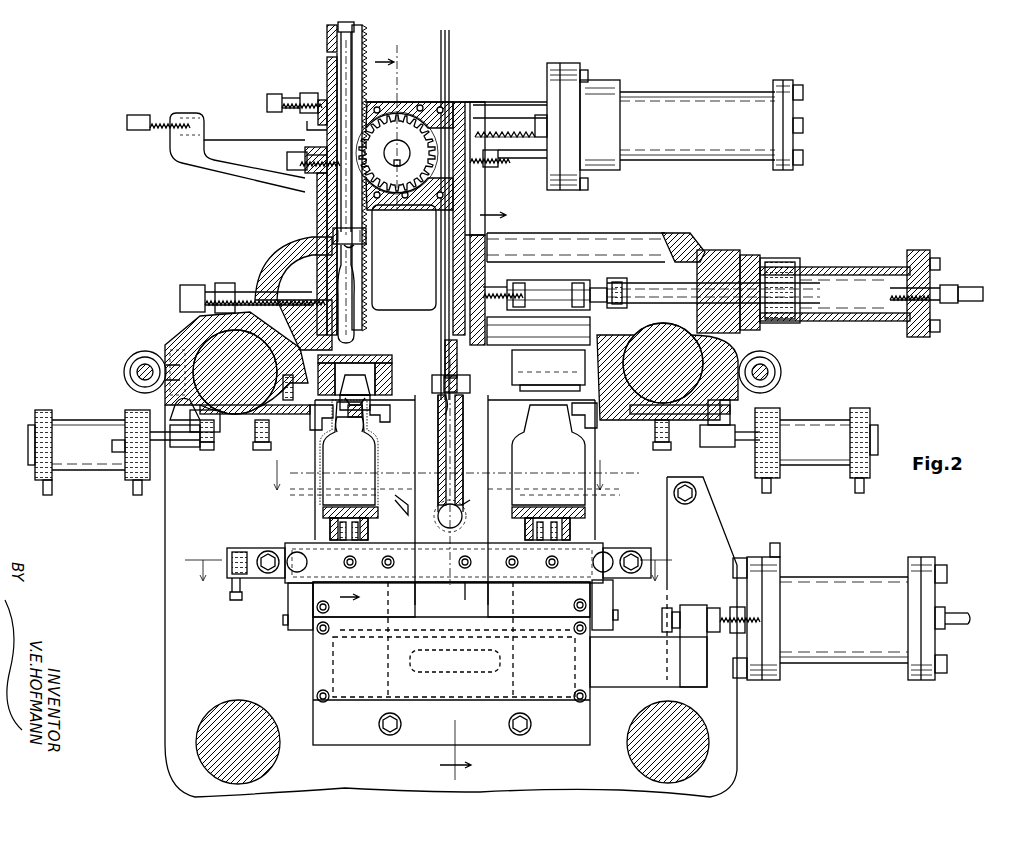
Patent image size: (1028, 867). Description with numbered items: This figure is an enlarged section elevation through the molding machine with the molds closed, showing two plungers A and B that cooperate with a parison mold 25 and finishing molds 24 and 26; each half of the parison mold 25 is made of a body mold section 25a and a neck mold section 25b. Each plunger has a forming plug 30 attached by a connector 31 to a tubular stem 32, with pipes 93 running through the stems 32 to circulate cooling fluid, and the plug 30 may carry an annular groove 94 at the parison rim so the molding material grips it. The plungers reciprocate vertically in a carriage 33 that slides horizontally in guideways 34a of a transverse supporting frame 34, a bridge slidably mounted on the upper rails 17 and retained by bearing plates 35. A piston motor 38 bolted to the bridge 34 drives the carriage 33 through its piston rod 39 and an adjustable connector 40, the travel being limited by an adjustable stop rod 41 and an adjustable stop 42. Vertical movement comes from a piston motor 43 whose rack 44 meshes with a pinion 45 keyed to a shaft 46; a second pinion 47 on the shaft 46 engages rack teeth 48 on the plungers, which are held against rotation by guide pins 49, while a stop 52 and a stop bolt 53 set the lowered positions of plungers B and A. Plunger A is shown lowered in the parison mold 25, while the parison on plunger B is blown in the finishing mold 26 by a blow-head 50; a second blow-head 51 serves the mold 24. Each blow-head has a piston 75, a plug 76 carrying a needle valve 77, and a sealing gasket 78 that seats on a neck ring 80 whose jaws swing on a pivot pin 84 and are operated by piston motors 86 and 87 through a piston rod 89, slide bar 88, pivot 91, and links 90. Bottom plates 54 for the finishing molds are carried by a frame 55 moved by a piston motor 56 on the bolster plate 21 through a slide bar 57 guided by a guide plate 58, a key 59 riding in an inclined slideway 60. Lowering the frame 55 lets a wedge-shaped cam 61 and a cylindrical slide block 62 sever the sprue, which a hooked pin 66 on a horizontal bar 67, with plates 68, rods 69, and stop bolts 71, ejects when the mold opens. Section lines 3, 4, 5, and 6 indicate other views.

The plunger B is at (325, 69).
The plunger A is at (456, 90).
The section line 3 is at (375, 326).
The section line 4 is at (482, 493).
The section line 5 is at (442, 475).
The section line 6 is at (428, 581).
The upper rails 17 is at (203, 341).
The bolster plate 21 is at (728, 495).
The finishing mold 24 is at (592, 486).
The parison mold 25 is at (406, 435).
The body mold section 25a is at (500, 447).
The neck mold section 25b is at (482, 417).
The finishing mold 26 is at (315, 488).
The forming plug 30 is at (355, 288).
The connector 31 is at (345, 216).
The tubular stem 32 is at (473, 217).
The carriage 33 is at (315, 193).
The transverse supporting frame 34 is at (700, 217).
The guideways 34a is at (576, 332).
The bearing plates 35 is at (255, 415).
The piston motor 38 is at (878, 266).
The piston rod 39 is at (655, 276).
The adjustable connector 40 is at (552, 289).
The adjustable stop rod 41 is at (964, 285).
The adjustable stop 42 is at (242, 285).
The piston motor 43 is at (710, 97).
The rack 44 is at (505, 113).
The pinion 45 is at (410, 114).
The shaft 46 is at (398, 143).
The second pinion 47 is at (393, 107).
The rack teeth 48 is at (367, 61).
The guide pins 49 is at (292, 160).
The blow-head 50 is at (395, 371).
The second blow-head 51 is at (558, 370).
The stop 52 is at (222, 103).
The stop bolt 53 is at (310, 96).
The bottom plates 54 is at (320, 508).
The frame 55 is at (304, 598).
The piston motor 56 is at (865, 584).
The slide bar 57 is at (625, 675).
The guide plate 58 is at (423, 700).
The key 59 is at (437, 665).
The inclined slideway 60 is at (558, 660).
The wedge-shaped cam 61 is at (466, 515).
The cylindrical slide block 62 is at (465, 514).
The pin 66 is at (468, 560).
The horizontal bar 67 is at (493, 585).
The plates 68 is at (400, 582).
The rods 69 is at (298, 556).
The stop bolts 71 is at (268, 553).
The piston 75 is at (392, 378).
The plug 76 is at (380, 356).
The needle valve 77 is at (350, 434).
The sealing gasket 78 is at (364, 402).
The neck ring 80 is at (392, 420).
The pivot pin 84 is at (345, 463).
The piston motor 86 is at (85, 435).
The piston motor 87 is at (810, 435).
The slide bar 88 is at (228, 418).
The piston rod 89 is at (176, 445).
The links 90 is at (256, 445).
The pivot 91 is at (263, 455).
The pipes 93 is at (338, 42).
The annular groove 94 is at (360, 251).